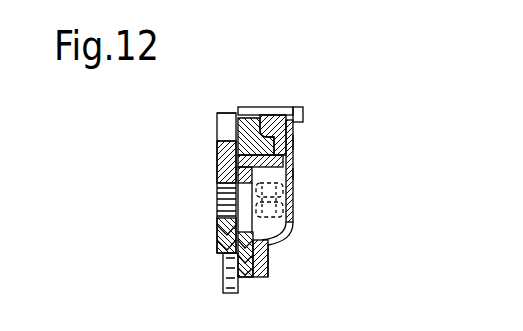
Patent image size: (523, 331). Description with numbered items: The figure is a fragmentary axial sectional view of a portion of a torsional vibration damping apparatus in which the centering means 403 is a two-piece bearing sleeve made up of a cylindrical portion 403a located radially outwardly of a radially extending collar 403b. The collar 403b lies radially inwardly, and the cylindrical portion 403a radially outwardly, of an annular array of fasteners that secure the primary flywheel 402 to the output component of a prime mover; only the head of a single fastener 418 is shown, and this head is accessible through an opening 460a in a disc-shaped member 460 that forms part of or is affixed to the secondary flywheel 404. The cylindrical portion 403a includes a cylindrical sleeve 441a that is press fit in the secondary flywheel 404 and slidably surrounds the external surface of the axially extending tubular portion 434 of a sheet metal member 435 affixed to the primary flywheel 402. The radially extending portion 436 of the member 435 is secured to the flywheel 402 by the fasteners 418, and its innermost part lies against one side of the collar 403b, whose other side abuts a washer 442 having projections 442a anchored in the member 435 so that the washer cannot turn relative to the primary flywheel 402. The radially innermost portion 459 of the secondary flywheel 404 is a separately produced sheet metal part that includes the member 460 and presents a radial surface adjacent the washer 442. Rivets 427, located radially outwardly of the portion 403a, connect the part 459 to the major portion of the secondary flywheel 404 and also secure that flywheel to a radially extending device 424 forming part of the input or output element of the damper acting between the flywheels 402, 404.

The primary flywheel 402 is at (226, 150).
The cylindrical sleeve 441a is at (226, 140).
The sheet metal member 435 is at (217, 172).
The radially extending portion 436 is at (226, 238).
The collar 403b is at (231, 279).
The secondary flywheel 404 is at (271, 114).
The disc-shaped member 460 is at (291, 110).
The rivets 427 is at (247, 117).
The radially extending device 424 is at (258, 115).
The axially extending tubular portion 434 is at (284, 160).
The opening 460a is at (283, 213).
The fastener 418 is at (236, 205).
The washer 442 is at (253, 277).
The projections 442a is at (244, 277).
The radially innermost portion 459 is at (269, 268).
The centering means 403 is at (296, 252).
The cylindrical portion 403a is at (297, 142).